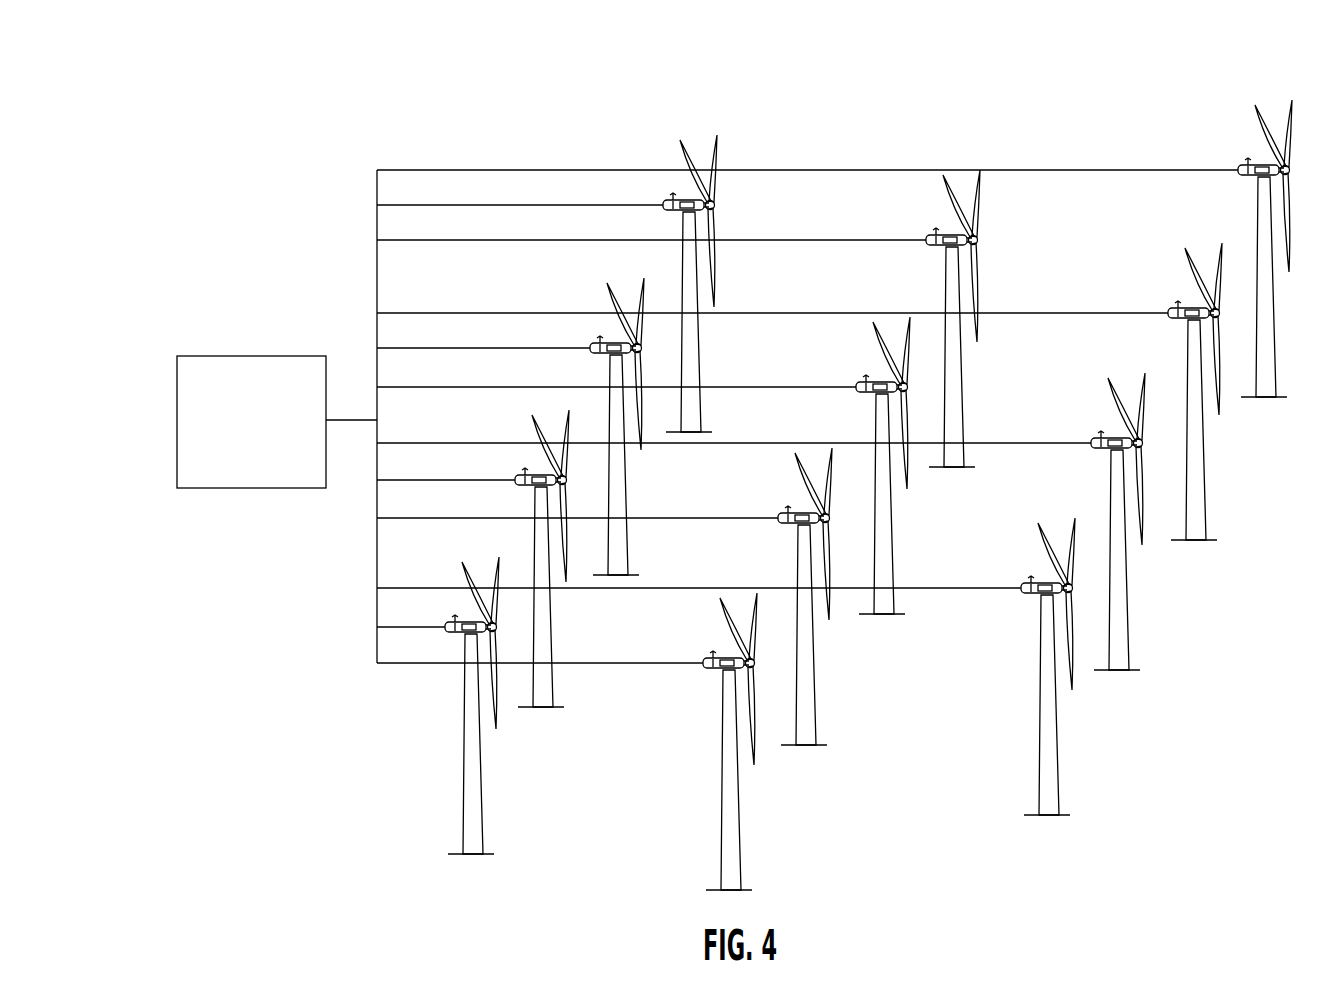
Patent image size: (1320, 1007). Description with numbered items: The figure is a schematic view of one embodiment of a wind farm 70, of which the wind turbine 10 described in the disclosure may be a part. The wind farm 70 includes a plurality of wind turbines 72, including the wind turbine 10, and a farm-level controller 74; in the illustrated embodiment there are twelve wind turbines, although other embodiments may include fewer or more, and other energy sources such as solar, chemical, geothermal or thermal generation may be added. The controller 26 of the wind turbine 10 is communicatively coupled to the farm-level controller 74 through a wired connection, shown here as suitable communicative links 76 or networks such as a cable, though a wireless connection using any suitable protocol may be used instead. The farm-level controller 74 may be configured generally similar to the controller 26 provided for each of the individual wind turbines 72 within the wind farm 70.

The wind farm 70 is at (287, 137).
The farm-level controller 74 is at (277, 422).
The communicative links 76 is at (540, 242).
The wind turbine 10 is at (488, 780).
The wind turbines 72 is at (552, 652).
The controller 26 is at (460, 622).